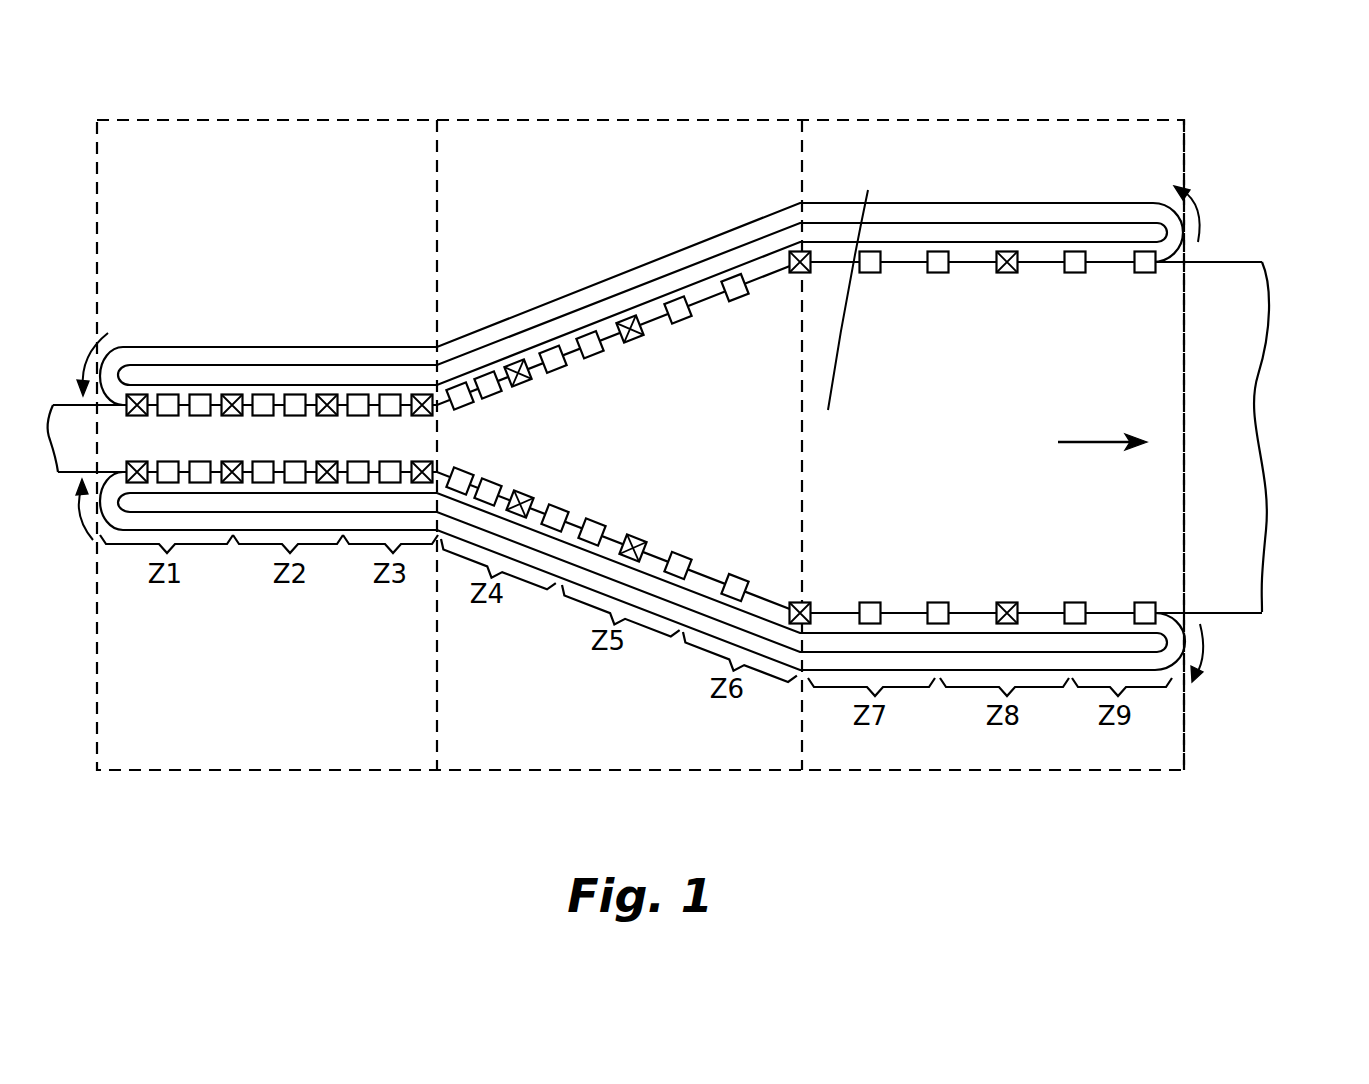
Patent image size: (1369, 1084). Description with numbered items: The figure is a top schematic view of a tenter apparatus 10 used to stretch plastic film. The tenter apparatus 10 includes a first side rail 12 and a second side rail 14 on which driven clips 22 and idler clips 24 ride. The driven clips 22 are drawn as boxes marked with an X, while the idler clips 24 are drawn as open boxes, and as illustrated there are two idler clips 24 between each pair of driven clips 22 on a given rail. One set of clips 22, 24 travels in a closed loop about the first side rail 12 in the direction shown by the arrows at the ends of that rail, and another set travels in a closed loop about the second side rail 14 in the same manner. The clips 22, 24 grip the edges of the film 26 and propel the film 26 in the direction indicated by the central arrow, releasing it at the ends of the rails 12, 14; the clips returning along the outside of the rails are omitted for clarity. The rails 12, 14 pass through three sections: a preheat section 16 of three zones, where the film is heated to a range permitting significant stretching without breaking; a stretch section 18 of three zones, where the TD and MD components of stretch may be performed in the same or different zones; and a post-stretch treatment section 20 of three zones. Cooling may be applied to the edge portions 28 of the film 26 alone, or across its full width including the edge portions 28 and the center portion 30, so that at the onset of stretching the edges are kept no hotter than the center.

The tenter apparatus 10 is at (143, 232).
The first side rail 12 is at (712, 268).
The second side rail 14 is at (1040, 640).
The preheat section 16 is at (235, 770).
The stretch section 18 is at (578, 770).
The post-stretch treatment section 20 is at (962, 770).
The driven clips 22 is at (515, 362).
The idler clips 24 is at (584, 334).
The film 26 is at (1272, 325).
The edge portions 28 is at (787, 283).
The center portion 30 is at (857, 283).